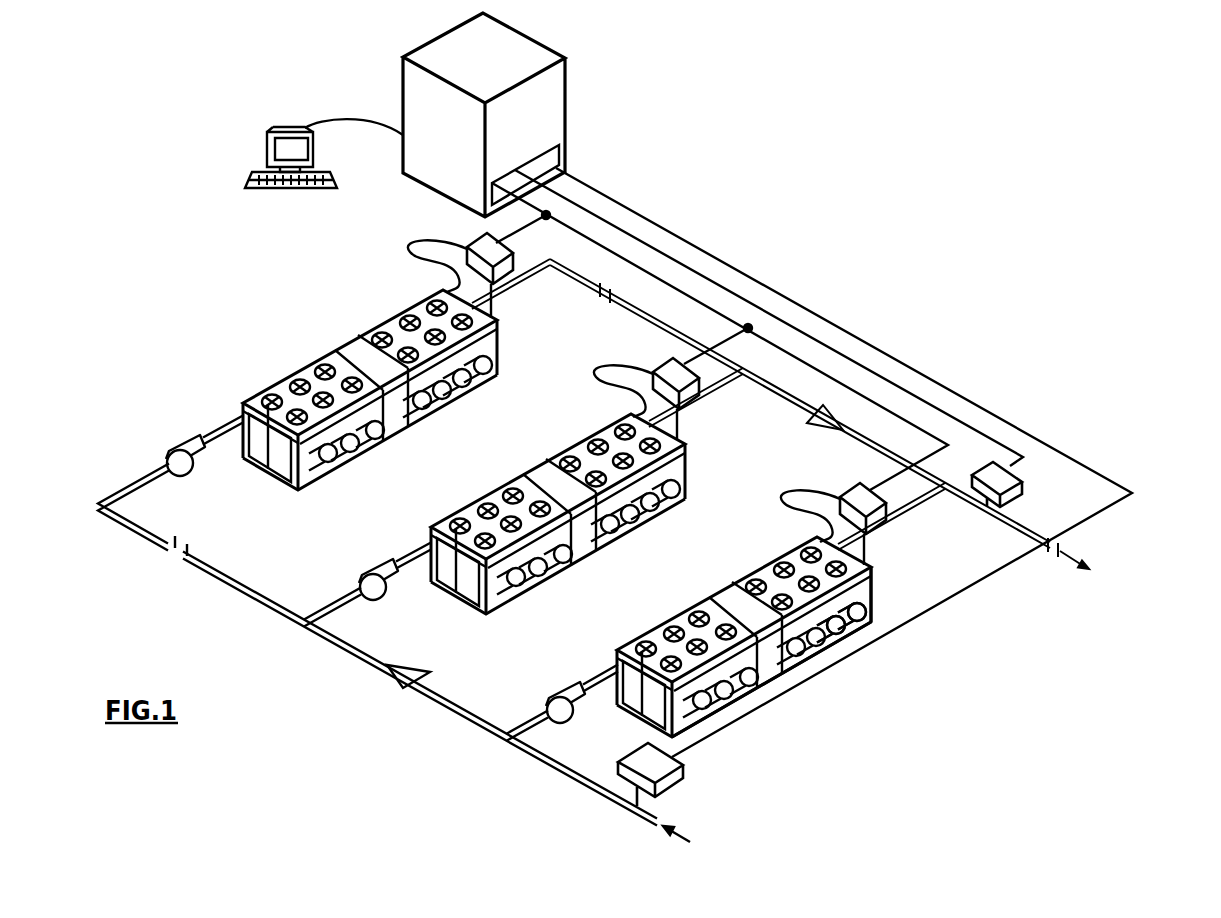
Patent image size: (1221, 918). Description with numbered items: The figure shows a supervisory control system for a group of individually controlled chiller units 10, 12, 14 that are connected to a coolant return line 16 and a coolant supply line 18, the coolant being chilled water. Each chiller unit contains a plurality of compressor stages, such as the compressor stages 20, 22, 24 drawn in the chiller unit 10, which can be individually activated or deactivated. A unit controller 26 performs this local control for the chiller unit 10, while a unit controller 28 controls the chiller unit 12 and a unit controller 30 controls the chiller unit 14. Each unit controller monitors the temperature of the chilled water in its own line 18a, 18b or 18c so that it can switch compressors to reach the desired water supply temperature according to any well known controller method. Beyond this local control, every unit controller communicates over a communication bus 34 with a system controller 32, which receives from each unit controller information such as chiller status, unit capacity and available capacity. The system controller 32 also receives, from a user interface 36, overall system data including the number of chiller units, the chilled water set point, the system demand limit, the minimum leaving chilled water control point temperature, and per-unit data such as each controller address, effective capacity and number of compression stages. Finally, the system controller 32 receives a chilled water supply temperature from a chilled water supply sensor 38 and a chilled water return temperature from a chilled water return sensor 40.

The chiller unit 10 is at (873, 577).
The chiller unit 12 is at (700, 451).
The chiller unit 14 is at (500, 333).
The coolant return line 16 is at (573, 778).
The coolant supply line 18 is at (747, 366).
The line 18a is at (937, 507).
The line 18b is at (733, 390).
The line 18c is at (530, 275).
The compressor stage 20 is at (872, 612).
The compressor stage 22 is at (850, 633).
The compressor stage 24 is at (837, 650).
The unit controller 26 is at (840, 490).
The unit controller 28 is at (665, 362).
The unit controller 30 is at (465, 247).
The system controller 32 is at (565, 107).
The communication bus 34 is at (528, 208).
The user interface 36 is at (313, 152).
The chilled water supply sensor 38 is at (1020, 483).
The chilled water return sensor 40 is at (683, 773).